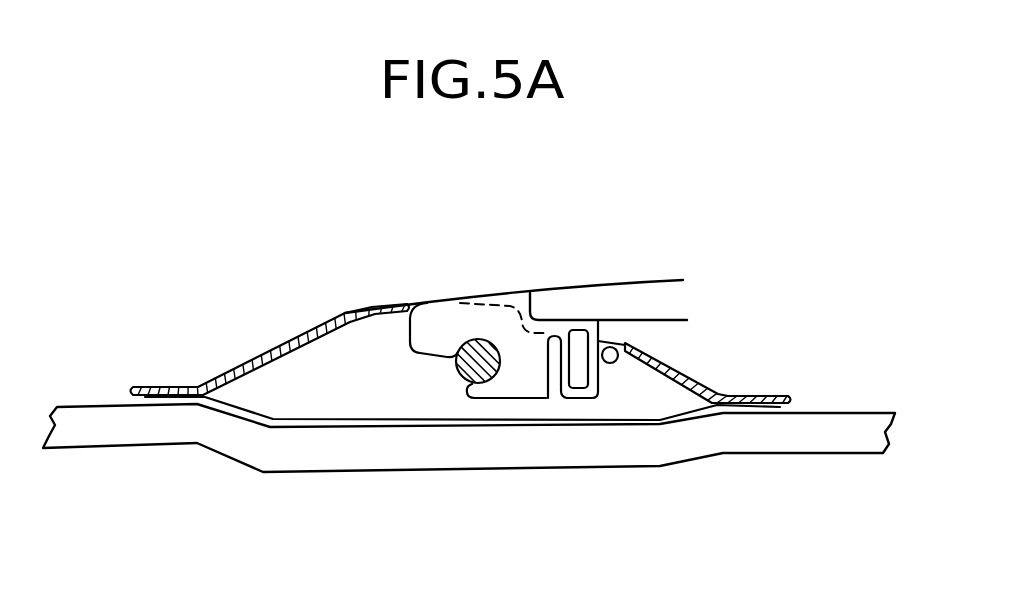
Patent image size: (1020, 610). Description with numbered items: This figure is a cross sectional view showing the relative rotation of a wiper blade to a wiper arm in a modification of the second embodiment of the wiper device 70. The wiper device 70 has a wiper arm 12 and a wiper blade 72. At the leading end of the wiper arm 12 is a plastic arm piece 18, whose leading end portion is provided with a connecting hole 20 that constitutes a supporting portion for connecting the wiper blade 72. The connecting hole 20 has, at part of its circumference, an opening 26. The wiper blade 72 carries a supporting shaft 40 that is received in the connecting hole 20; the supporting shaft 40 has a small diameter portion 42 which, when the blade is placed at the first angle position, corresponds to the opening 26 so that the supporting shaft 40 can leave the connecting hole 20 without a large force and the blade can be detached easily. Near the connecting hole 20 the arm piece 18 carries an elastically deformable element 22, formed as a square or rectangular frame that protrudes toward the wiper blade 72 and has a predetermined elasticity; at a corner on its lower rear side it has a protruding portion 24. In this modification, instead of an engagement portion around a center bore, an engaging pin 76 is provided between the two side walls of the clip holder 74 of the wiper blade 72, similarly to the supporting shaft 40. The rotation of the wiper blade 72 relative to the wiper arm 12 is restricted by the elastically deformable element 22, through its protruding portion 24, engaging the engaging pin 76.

The wiper arm 12 is at (608, 306).
The arm piece 18 is at (598, 291).
The connecting hole 20 is at (470, 338).
The elastically deformable element 22 is at (577, 398).
The protruding portion 24 is at (603, 399).
The opening 26 is at (455, 355).
The supporting shaft 40 is at (480, 384).
The small diameter portion 42 is at (462, 352).
The wiper device 70 is at (318, 305).
The wiper blade 72 is at (103, 412).
The clip holder 74 is at (257, 357).
The engaging pin 76 is at (612, 364).